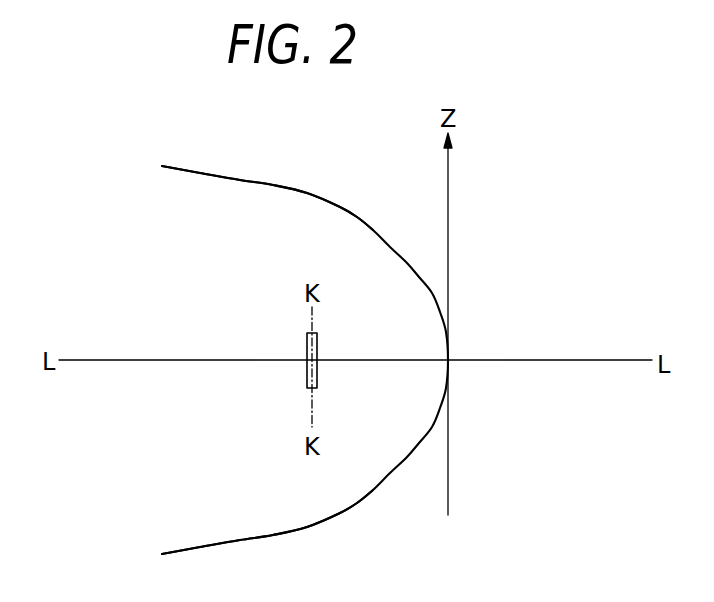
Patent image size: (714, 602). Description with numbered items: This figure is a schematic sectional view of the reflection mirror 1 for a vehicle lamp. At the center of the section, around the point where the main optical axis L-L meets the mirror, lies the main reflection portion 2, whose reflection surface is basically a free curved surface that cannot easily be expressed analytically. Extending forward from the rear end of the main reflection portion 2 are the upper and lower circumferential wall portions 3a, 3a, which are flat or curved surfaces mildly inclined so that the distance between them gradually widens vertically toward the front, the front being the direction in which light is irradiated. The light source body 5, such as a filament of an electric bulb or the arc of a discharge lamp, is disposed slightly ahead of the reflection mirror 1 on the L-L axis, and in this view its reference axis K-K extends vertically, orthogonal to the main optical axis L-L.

The reflection mirror 1 is at (355, 343).
The main reflection portion 2 is at (419, 277).
The upper and lower circumferential wall portions 3a is at (188, 170).
The light source body 5 is at (317, 358).